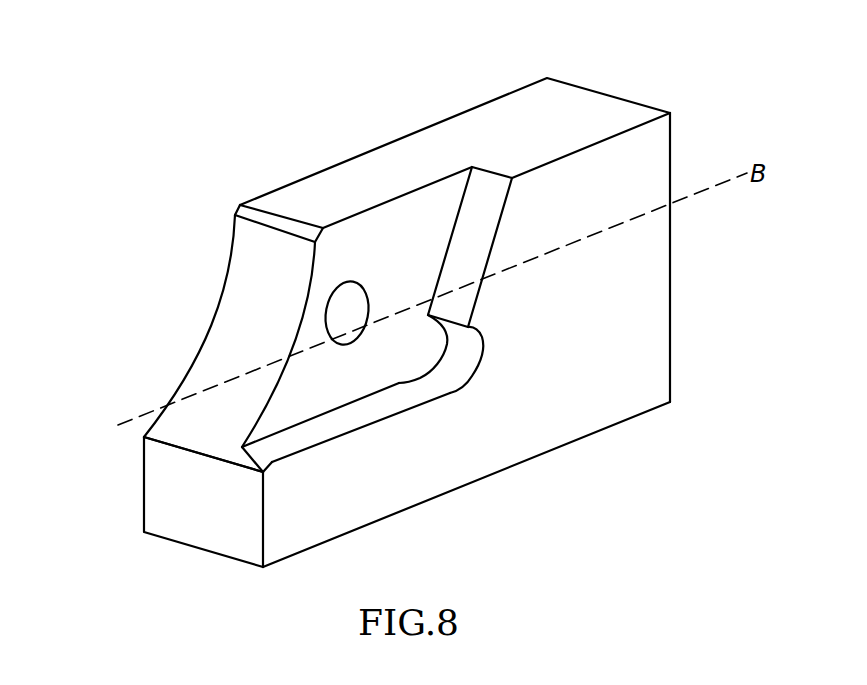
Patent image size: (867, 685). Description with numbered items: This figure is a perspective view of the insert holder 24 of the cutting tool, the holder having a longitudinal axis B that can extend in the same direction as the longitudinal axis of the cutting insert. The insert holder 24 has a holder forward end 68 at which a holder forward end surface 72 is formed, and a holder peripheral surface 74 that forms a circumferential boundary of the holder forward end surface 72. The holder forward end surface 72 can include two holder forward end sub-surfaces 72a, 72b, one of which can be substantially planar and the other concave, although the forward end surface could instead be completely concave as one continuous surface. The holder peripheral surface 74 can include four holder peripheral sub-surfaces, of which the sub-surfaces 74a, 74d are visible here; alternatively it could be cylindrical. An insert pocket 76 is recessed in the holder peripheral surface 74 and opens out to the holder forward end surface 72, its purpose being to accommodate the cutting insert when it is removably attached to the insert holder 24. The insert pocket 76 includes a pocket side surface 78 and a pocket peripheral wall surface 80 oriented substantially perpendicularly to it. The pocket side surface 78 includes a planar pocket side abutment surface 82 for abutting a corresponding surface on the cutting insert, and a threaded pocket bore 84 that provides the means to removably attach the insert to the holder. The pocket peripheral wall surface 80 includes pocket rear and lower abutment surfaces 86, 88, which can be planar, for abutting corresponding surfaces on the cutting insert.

The insert holder 24 is at (632, 72).
The holder forward end 68 is at (134, 298).
The holder forward end surface 72 is at (244, 309).
The holder forward end sub-surface 72a is at (195, 408).
The holder forward end sub-surface 72b is at (165, 503).
The holder peripheral surface 74 is at (633, 277).
The holder peripheral sub-surface 74a is at (640, 312).
The holder peripheral sub-surface 74d is at (557, 107).
The insert pocket 76 is at (383, 255).
The pocket side surface 78 is at (403, 210).
The pocket peripheral wall surface 80 is at (482, 190).
The pocket side abutment surface 82 is at (438, 202).
The threaded pocket bore 84 is at (352, 280).
The pocket rear abutment surface 86 is at (485, 203).
The pocket lower abutment surface 88 is at (320, 430).